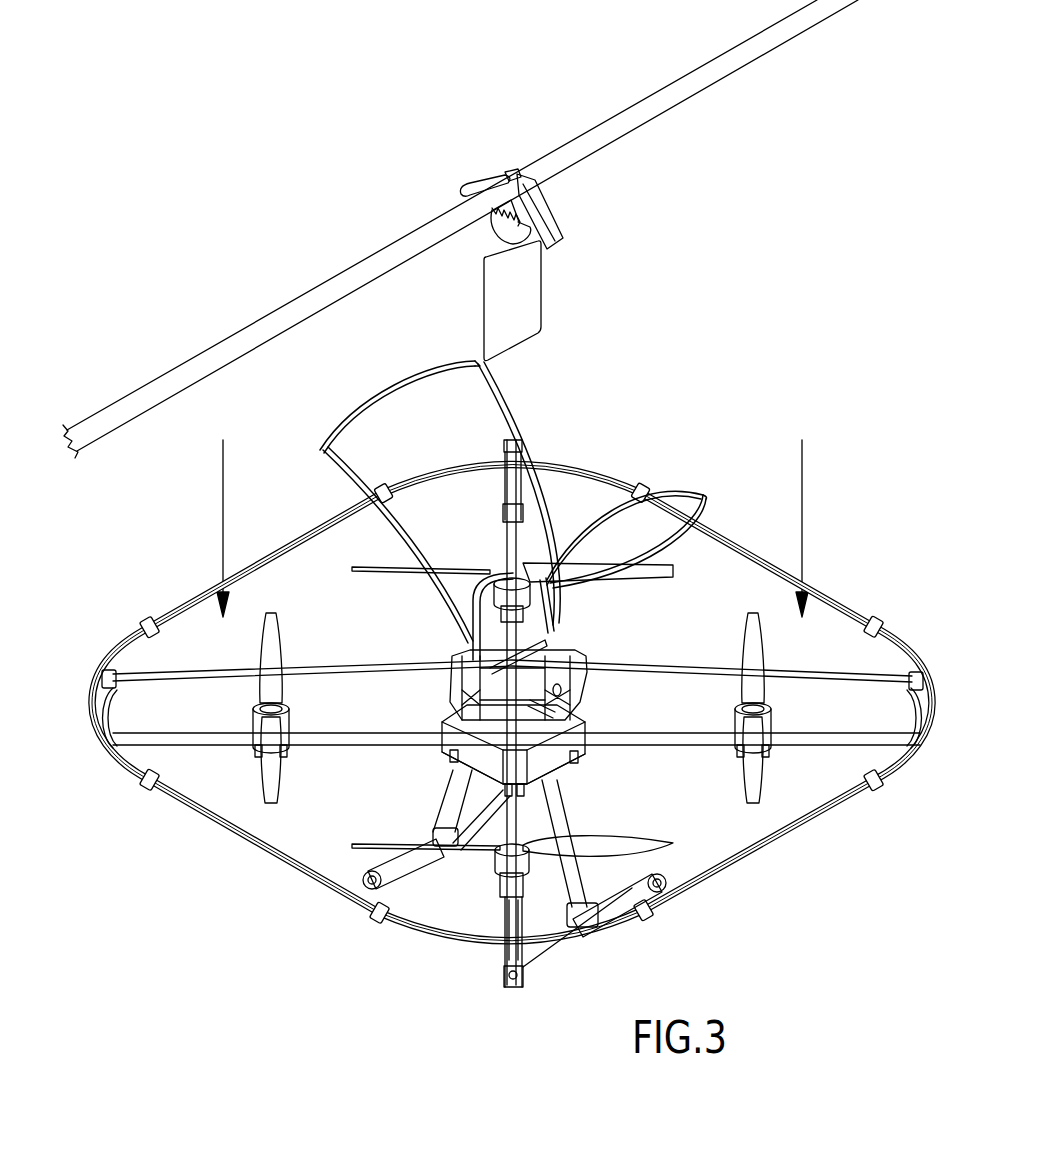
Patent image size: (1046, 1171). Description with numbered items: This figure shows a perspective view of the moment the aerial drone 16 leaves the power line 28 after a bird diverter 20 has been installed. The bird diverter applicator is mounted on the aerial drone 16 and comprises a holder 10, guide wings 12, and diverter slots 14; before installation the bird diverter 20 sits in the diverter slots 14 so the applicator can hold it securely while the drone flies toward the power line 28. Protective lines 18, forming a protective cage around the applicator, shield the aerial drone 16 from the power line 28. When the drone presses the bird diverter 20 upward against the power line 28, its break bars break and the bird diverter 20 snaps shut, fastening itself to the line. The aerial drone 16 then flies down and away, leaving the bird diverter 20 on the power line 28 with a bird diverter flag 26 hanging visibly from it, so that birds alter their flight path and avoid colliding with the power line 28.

The holder 10 is at (560, 687).
The guide wings 12 is at (326, 463).
The diverter slots 14 is at (543, 643).
The aerial drone 16 is at (463, 762).
The protective lines 18 is at (320, 670).
The bird diverter 20 is at (555, 235).
The bird diverter flag 26 is at (530, 298).
The power line 28 is at (597, 142).